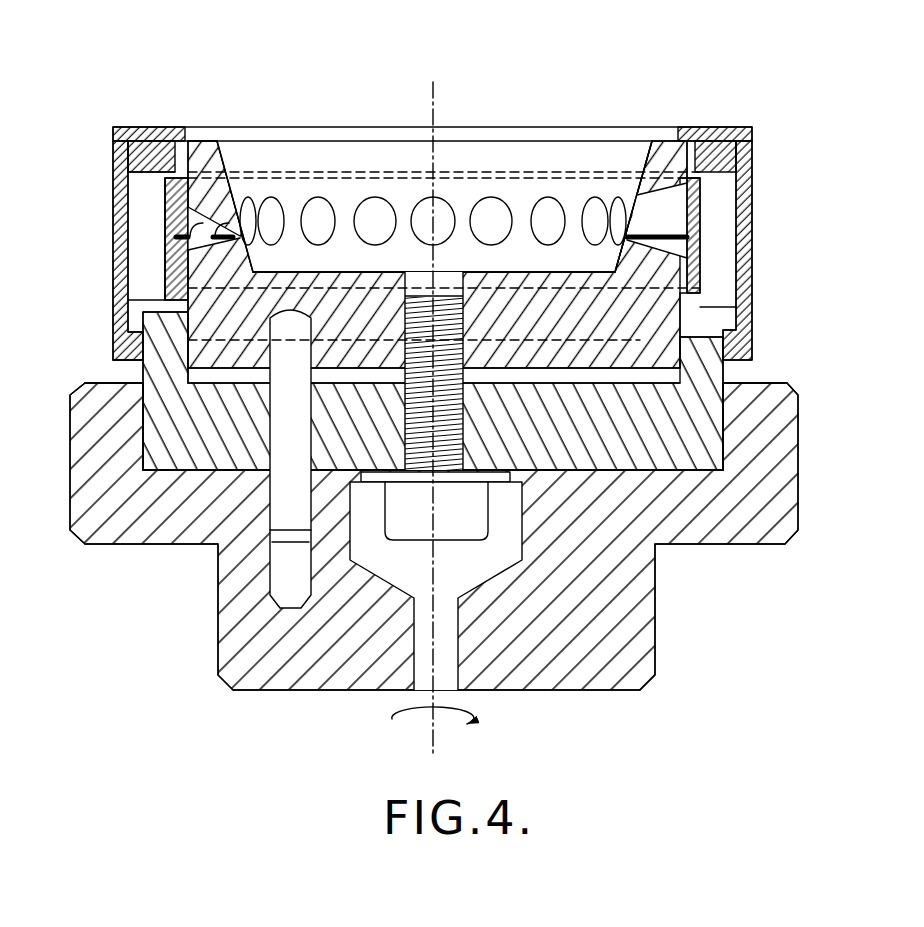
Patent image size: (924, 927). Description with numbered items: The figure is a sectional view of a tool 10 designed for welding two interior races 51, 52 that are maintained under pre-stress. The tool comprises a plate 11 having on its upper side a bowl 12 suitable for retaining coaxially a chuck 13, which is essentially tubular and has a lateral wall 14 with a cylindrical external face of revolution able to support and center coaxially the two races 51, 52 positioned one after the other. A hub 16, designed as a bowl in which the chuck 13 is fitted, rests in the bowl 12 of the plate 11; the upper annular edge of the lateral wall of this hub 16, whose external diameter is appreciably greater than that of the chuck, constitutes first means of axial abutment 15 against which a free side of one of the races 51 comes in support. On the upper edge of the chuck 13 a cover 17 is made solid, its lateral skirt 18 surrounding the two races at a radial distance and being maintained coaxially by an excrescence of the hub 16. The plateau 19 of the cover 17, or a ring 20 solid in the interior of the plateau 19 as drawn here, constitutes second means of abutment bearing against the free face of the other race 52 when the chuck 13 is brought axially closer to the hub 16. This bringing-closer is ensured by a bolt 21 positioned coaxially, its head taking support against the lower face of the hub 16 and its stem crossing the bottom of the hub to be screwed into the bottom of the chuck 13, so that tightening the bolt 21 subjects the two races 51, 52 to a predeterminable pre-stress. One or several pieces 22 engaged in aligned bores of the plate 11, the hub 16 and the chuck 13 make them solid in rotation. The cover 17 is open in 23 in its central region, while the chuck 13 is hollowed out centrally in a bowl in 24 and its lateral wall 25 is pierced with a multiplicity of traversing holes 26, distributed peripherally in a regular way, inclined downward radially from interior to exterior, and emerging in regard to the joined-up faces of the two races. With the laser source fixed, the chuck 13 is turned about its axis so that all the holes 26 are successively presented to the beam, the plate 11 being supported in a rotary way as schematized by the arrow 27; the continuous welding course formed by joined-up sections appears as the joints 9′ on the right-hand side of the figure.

The interior race 51 is at (165, 250).
The interior race 52 is at (165, 197).
The joints 9′ is at (700, 245).
The tool 10 is at (97, 362).
The plate 11 is at (183, 530).
The bowl 12 is at (717, 414).
The chuck 13 is at (221, 162).
The lateral wall 14 is at (167, 157).
The first means of axial abutment 15 is at (165, 300).
The hub 16 is at (160, 410).
The cover 17 is at (707, 127).
The lateral skirt 18 is at (743, 213).
The plateau 19 is at (133, 128).
The cap flange 20 is at (135, 157).
The bolt 21 is at (418, 436).
The pieces 22 is at (290, 502).
The opening 23 is at (186, 141).
The bowl 24 is at (522, 271).
The lateral wall 25 is at (630, 193).
The traversing holes 26 is at (418, 212).
The arrow 27 is at (478, 721).